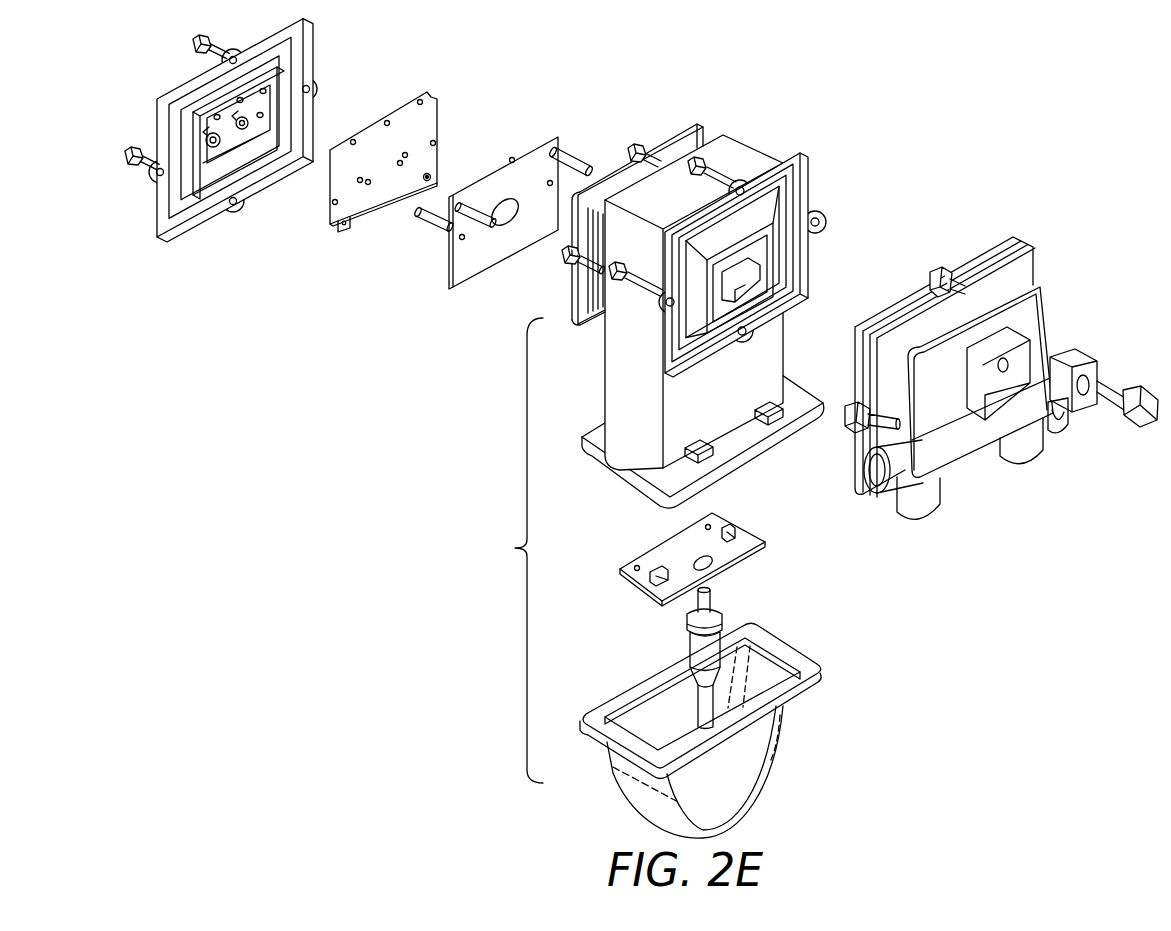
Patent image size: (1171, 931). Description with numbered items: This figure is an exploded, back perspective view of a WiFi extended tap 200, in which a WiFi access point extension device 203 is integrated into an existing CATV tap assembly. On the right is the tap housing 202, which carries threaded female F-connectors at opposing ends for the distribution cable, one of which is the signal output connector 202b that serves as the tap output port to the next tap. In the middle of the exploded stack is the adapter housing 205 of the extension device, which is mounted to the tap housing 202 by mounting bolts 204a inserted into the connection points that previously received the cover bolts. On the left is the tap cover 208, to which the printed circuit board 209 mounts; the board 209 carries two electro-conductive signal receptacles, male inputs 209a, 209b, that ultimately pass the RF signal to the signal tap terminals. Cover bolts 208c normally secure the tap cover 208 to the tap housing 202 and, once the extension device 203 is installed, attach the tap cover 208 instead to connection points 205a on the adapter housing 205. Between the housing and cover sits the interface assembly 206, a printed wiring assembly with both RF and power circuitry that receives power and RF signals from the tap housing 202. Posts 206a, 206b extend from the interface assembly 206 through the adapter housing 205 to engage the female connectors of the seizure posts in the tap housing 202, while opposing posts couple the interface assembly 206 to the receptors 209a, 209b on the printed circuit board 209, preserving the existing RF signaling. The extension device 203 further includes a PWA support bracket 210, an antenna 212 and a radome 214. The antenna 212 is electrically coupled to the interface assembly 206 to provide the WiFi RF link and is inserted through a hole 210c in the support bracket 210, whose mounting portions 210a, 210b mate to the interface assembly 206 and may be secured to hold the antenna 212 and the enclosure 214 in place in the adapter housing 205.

The WiFi extended tap 200 is at (990, 811).
The tap housing 202 is at (1001, 378).
The signal output connector 202b is at (883, 494).
The WiFi access point extension device 203 is at (515, 548).
The mounting bolts 204a is at (708, 166).
The adapter housing 205 is at (704, 241).
The connection points 205a is at (637, 148).
The interface assembly 206 is at (481, 216).
The post 206a is at (578, 160).
The post 206b is at (479, 225).
The tap cover 208 is at (185, 143).
The cover bolts 208c is at (193, 42).
The printed circuit board 209 is at (370, 184).
The male input 209a is at (431, 175).
The male input 209b is at (346, 230).
The PWA support bracket 210 is at (665, 572).
The mounting portion 210a is at (648, 584).
The mounting portion 210b is at (705, 527).
The hole 210c is at (694, 560).
The antenna 212 is at (686, 642).
The radome 214 is at (607, 761).